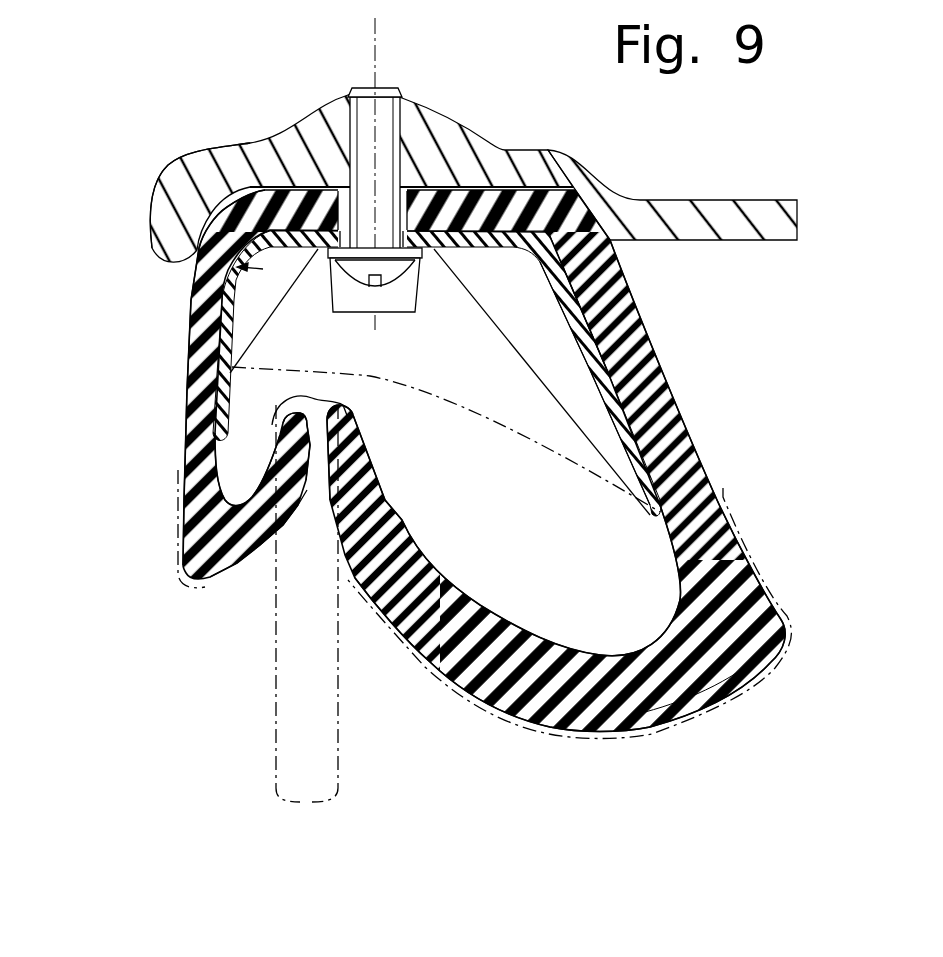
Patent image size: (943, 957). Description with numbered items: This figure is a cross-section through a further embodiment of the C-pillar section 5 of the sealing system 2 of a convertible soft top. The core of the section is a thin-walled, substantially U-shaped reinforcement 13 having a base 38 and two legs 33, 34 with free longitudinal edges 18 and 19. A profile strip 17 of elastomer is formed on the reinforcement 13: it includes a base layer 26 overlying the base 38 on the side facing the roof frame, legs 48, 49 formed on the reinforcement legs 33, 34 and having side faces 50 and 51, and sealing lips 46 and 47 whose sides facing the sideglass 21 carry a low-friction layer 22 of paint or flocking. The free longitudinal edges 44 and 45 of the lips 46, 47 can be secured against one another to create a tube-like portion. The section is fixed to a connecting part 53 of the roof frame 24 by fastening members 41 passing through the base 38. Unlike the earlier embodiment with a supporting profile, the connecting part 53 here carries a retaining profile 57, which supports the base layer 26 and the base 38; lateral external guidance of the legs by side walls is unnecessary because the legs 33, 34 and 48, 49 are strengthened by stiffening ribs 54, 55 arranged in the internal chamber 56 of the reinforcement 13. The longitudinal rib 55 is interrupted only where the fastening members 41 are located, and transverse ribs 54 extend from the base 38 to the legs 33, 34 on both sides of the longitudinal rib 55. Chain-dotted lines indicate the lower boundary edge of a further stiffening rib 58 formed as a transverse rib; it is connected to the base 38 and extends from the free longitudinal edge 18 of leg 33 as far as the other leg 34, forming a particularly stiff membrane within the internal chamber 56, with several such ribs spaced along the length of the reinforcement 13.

The sealing system 2 is at (774, 663).
The C-pillar section 5 is at (706, 711).
The reinforcement 13 is at (595, 385).
The profile strip 17 is at (426, 662).
The free longitudinal edge 18 is at (662, 527).
The free longitudinal edge 19 is at (247, 469).
The sideglass 21 is at (276, 707).
The low-friction layer 22 is at (197, 586).
The roof frame 24 is at (544, 148).
The base layer 26 is at (297, 203).
The leg 33 is at (565, 330).
The leg 34 is at (228, 314).
The base 38 is at (510, 240).
The fastening member 41 is at (358, 88).
The free longitudinal edge 44 is at (334, 403).
The free longitudinal edge 45 is at (297, 405).
The sealing lip 46 is at (527, 702).
The sealing lip 47 is at (263, 528).
The leg 48 is at (685, 436).
The leg 49 is at (203, 417).
The side face 50 is at (665, 378).
The side face 51 is at (185, 374).
The connecting part 53 is at (470, 118).
The transverse rib 54 is at (272, 320).
The longitudinal rib 55 is at (395, 311).
The internal chamber 56 is at (193, 285).
The retaining profile 57 is at (222, 190).
The transverse rib 58 is at (423, 403).